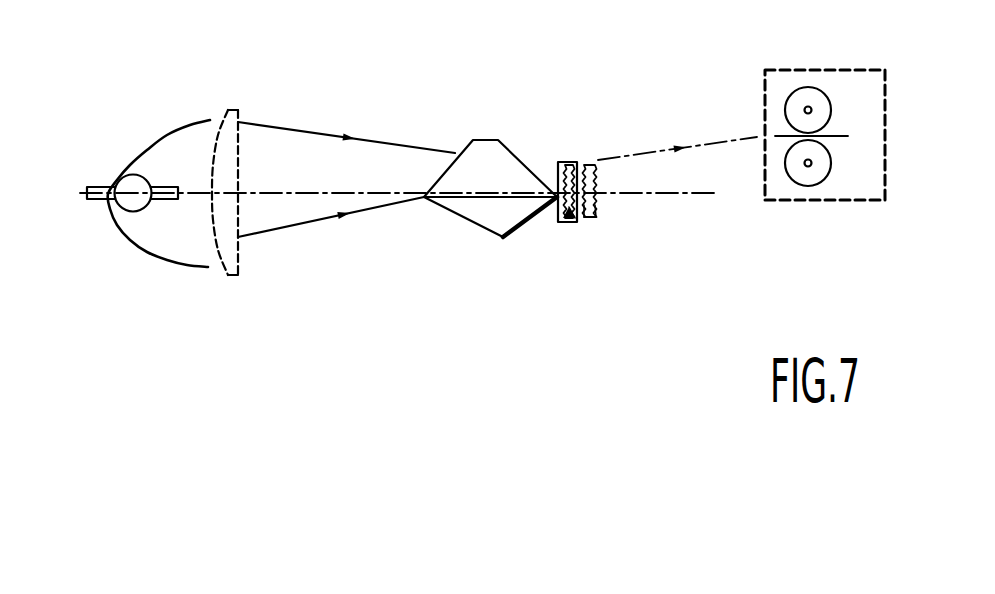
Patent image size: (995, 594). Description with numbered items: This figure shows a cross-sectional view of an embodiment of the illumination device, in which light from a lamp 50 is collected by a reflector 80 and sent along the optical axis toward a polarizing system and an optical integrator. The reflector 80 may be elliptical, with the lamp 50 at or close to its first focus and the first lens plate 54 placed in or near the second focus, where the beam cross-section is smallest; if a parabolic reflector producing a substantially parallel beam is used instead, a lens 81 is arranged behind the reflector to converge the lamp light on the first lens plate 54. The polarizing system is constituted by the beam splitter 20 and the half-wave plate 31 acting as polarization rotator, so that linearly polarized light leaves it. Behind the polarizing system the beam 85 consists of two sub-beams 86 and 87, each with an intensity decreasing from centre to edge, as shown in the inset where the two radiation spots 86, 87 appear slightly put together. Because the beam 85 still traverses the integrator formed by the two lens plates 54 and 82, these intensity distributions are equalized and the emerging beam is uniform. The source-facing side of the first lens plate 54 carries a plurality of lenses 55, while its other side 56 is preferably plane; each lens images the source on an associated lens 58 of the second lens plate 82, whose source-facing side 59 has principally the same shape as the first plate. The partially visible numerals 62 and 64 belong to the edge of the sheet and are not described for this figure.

The beam splitter 20 is at (498, 133).
The λ/2 plate 31 is at (518, 233).
The lamp 50 is at (106, 200).
The first lens plate 54 is at (573, 165).
The lenses 55 is at (567, 218).
The other side 56 is at (578, 220).
The lens 58 is at (596, 212).
The source-facing side 59 is at (584, 218).
The reference numeral 62 is at (595, 588).
The reference numeral 64 is at (645, 588).
The reflector 80 is at (134, 245).
The lens 81 is at (229, 276).
The second lens plate 82 is at (591, 165).
The beam 85 is at (558, 168).
The sub-beam 86 is at (821, 102).
The sub-beam 87 is at (822, 165).